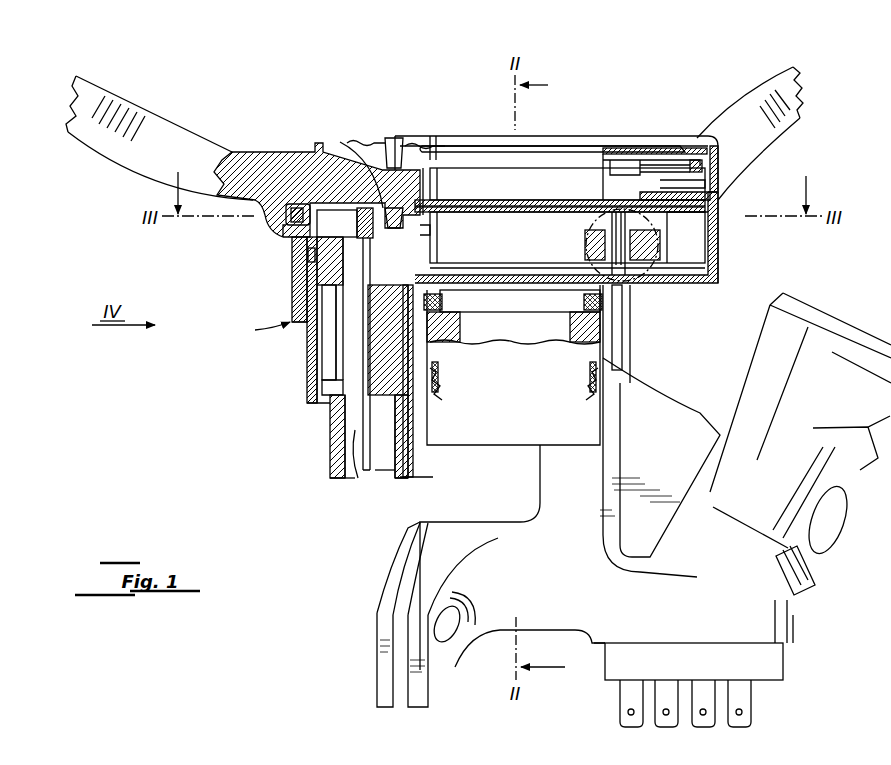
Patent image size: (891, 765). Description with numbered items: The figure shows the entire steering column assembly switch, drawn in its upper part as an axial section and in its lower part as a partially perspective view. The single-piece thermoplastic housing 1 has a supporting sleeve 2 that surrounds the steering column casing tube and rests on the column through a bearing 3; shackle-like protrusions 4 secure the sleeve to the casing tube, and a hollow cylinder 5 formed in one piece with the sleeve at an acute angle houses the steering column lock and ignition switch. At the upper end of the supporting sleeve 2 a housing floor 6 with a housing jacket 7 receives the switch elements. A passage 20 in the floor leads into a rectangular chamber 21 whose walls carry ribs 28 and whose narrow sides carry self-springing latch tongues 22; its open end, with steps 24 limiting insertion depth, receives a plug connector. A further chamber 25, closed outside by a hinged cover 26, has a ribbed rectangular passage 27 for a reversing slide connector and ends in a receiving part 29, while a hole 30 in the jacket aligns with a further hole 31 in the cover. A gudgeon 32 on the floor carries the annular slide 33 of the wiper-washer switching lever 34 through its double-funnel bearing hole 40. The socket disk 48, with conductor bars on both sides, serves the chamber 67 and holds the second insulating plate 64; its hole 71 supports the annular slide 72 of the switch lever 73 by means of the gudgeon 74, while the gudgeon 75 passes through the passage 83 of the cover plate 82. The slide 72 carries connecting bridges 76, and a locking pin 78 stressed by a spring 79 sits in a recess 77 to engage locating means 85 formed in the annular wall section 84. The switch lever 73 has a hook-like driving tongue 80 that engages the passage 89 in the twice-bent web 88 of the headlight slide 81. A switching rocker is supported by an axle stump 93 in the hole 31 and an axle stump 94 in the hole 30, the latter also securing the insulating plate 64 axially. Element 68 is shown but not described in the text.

The housing 1 is at (730, 282).
The supporting sleeve 2 is at (624, 352).
The bearing 3 is at (478, 312).
The shackle-like protrusions 4 is at (385, 600).
The hollow cylinder 5 is at (812, 578).
The housing floor 6 is at (712, 285).
The housing jacket 7 is at (720, 250).
The passage 20 is at (533, 345).
The chamber 21 is at (465, 432).
The latch tongues 22 is at (446, 393).
The steps 24 is at (382, 420).
The further chamber 25 is at (328, 358).
The hinged cover 26 is at (307, 344).
The rectangular passage 27 is at (340, 420).
The ribs 28 is at (335, 378).
The receiving part 29 is at (348, 480).
The hole 30 is at (388, 381).
The further hole 31 is at (298, 290).
The gudgeon 32 is at (610, 245).
The annular slide 33 is at (567, 240).
The wiper-washer switching lever 34 is at (805, 108).
The bearing hole 40 is at (640, 280).
The socket disk 48 is at (447, 205).
The second insulating plate 64 is at (378, 475).
The chamber 67 is at (566, 290).
The plate 68 is at (458, 140).
The hole 71 is at (415, 215).
The annular slide 72 is at (564, 191).
The switch lever 73 is at (148, 125).
The gudgeon 74 is at (350, 147).
The gudgeon 75 is at (392, 137).
The connecting bridges 76 is at (714, 205).
The recess 77 is at (650, 175).
The locking pin 78 is at (688, 212).
The spring 79 is at (697, 158).
The driving tongue 80 is at (275, 226).
The slide 81 is at (256, 333).
The cover plate 82 is at (494, 140).
The passage 83 is at (404, 145).
The annular wall section 84 is at (720, 160).
The locating means 85 is at (714, 186).
The web 88 is at (292, 278).
The passage 89 is at (298, 203).
The axle stump 93 is at (308, 258).
The axle stump 94 is at (370, 258).